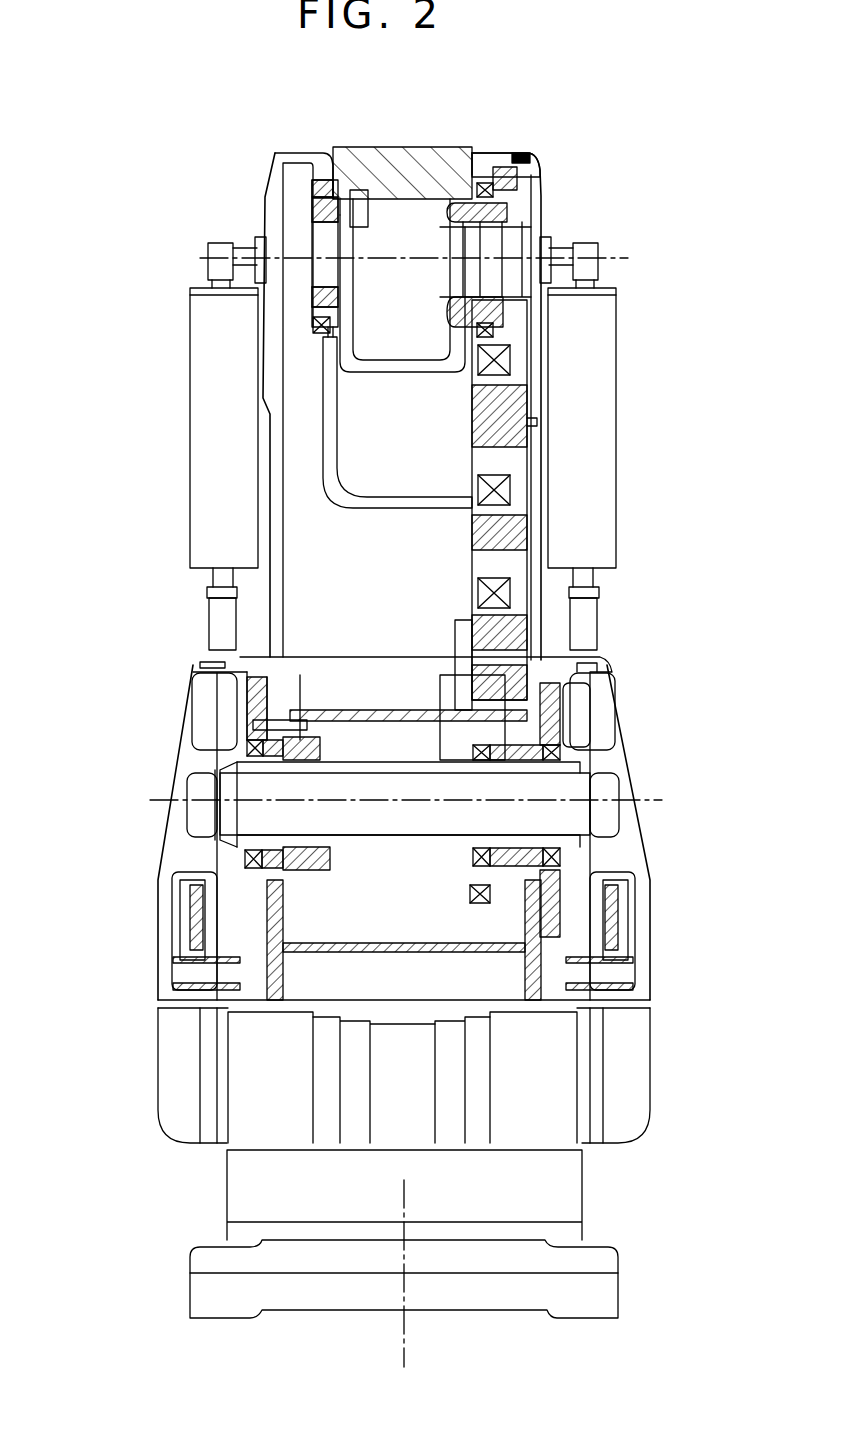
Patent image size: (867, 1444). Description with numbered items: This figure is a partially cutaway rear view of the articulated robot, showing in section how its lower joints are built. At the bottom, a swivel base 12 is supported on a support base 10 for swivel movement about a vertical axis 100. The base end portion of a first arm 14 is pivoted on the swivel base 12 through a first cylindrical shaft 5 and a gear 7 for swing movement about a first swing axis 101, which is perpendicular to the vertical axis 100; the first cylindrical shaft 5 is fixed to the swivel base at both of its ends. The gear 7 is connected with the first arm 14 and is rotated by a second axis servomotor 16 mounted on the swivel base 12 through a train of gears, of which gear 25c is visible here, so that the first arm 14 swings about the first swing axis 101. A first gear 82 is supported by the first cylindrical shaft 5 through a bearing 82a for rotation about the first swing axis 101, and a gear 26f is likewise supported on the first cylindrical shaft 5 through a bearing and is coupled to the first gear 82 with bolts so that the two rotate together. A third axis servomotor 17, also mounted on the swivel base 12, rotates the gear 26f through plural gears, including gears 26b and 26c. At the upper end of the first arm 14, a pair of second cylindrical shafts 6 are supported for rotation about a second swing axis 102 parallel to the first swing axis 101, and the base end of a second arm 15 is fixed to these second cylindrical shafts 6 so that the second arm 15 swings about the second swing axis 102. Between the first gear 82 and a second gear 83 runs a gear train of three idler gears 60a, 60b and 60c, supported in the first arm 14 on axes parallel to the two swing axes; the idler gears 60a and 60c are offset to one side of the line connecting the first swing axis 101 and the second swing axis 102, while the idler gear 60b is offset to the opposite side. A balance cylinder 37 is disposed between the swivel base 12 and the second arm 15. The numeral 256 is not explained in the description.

The first cylindrical shaft 5 is at (250, 791).
The second cylindrical shafts 6 is at (470, 248).
The gear 7 is at (240, 701).
The support base 10 is at (607, 1293).
The swivel base 12 is at (607, 721).
The first arm 14 is at (300, 603).
The second arm 15 is at (430, 168).
The second axis servomotor 16 is at (253, 1113).
The third axis servomotor 17 is at (557, 1117).
The gear 25c is at (270, 950).
The gear 26b is at (618, 922).
The gear 26c is at (528, 958).
The gear 26f is at (532, 728).
The balance cylinder 37 is at (205, 398).
The idler gear 60a is at (512, 361).
The idler gear 60b is at (512, 491).
The idler gear 60c is at (512, 594).
The first gear 82 is at (527, 722).
The bearing 82a is at (452, 726).
The second gear 83 is at (527, 167).
The vertical axis 100 is at (404, 1345).
The first swing axis 101 is at (662, 803).
The second swing axis 102 is at (630, 257).
The brake unit 256 is at (168, 918).